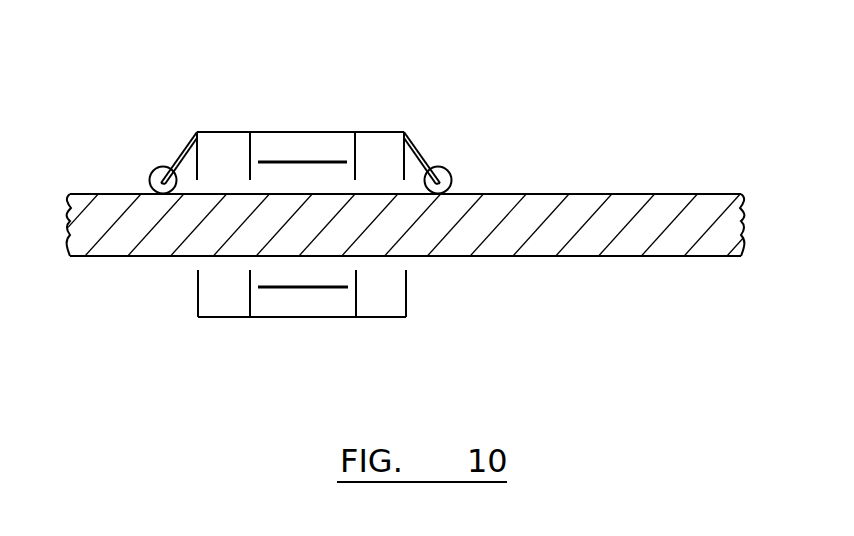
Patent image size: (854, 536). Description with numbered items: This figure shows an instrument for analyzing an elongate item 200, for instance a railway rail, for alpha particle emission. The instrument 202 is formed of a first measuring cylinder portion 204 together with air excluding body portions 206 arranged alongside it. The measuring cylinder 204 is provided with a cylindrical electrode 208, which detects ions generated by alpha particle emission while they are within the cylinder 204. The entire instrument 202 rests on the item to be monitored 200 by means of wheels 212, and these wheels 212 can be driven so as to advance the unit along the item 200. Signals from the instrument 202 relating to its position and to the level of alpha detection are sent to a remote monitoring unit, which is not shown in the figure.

The elongate item 200 is at (613, 220).
The instrument 202 is at (326, 112).
The first measuring cylinder portion 204 is at (265, 132).
The air excluding body portions 206 is at (390, 146).
The cylindrical electrode 208 is at (302, 290).
The wheels 212 is at (153, 173).